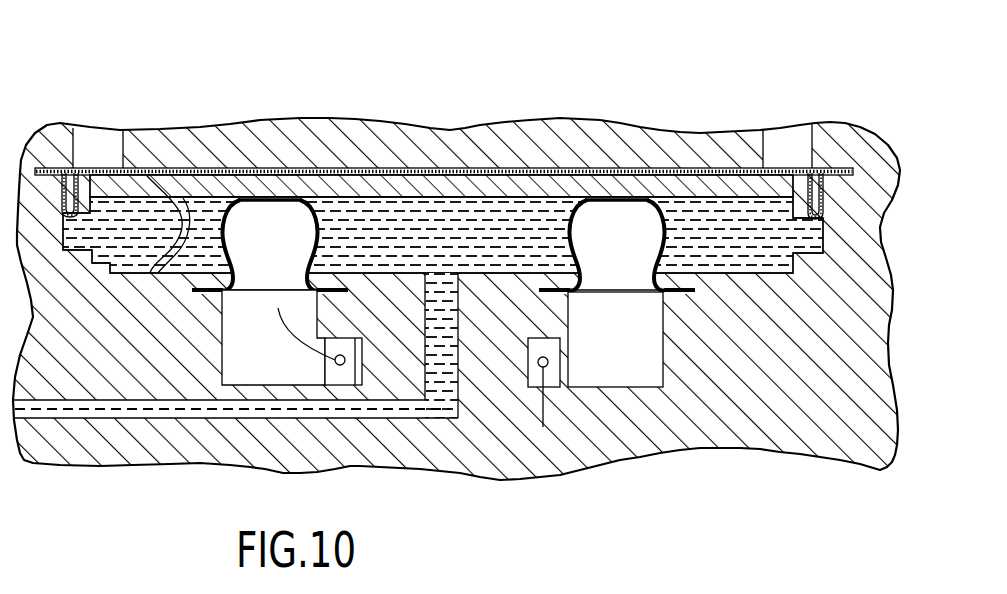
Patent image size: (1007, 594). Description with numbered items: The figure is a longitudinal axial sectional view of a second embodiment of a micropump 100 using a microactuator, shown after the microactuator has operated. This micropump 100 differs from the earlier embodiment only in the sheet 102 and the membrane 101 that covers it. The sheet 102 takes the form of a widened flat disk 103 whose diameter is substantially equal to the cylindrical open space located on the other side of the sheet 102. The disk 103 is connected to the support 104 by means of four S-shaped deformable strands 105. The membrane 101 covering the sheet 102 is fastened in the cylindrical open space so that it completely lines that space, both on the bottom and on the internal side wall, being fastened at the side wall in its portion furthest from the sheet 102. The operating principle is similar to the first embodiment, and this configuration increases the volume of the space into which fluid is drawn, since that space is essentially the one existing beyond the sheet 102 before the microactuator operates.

The micropump 100 is at (503, 297).
The membrane 101 is at (96, 165).
The sheet 102 is at (624, 197).
The widened flat disk 103 is at (425, 193).
The support 104 is at (118, 338).
The S-shaped deformable strands 105 is at (147, 176).